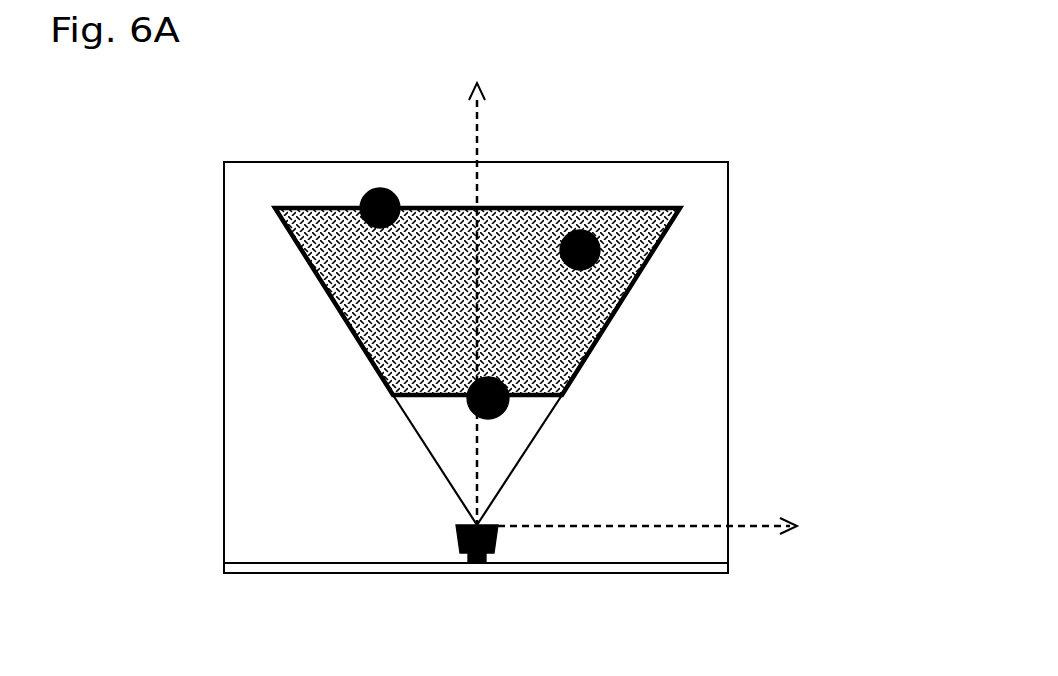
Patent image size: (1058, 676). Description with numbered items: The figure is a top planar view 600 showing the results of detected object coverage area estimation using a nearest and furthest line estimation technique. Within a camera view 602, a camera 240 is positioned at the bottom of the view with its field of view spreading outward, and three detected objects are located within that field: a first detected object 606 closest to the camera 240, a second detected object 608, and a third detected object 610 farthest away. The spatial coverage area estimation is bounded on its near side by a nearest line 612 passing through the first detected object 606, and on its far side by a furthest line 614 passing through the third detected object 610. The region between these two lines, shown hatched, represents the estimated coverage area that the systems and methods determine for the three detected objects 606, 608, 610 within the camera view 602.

The top planar view 600 is at (522, 367).
The camera view 602 is at (292, 513).
The camera 240 is at (500, 546).
The first detected object 606 is at (498, 417).
The second detected object 608 is at (582, 230).
The third detected object 610 is at (378, 188).
The nearest line 612 is at (413, 397).
The furthest line 614 is at (516, 208).